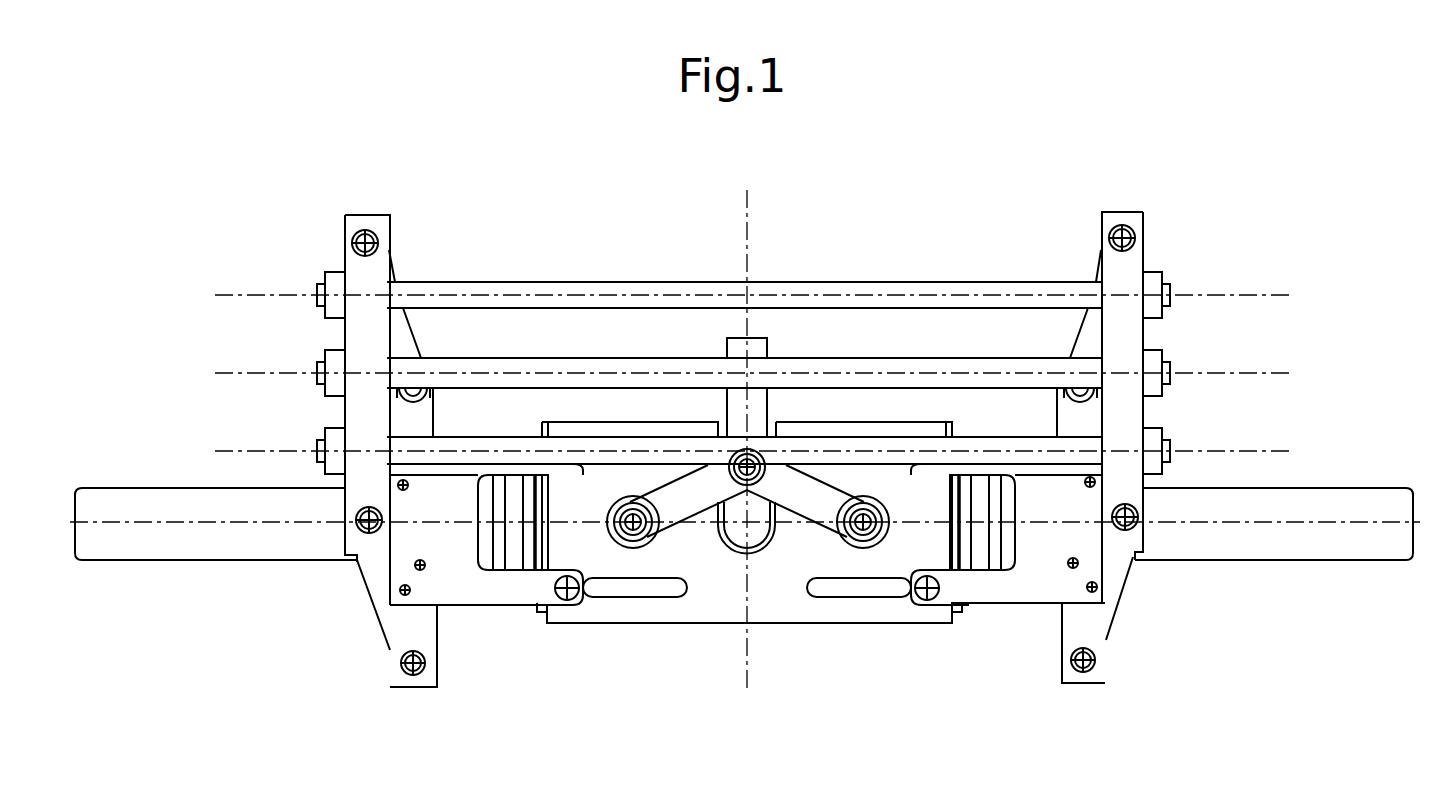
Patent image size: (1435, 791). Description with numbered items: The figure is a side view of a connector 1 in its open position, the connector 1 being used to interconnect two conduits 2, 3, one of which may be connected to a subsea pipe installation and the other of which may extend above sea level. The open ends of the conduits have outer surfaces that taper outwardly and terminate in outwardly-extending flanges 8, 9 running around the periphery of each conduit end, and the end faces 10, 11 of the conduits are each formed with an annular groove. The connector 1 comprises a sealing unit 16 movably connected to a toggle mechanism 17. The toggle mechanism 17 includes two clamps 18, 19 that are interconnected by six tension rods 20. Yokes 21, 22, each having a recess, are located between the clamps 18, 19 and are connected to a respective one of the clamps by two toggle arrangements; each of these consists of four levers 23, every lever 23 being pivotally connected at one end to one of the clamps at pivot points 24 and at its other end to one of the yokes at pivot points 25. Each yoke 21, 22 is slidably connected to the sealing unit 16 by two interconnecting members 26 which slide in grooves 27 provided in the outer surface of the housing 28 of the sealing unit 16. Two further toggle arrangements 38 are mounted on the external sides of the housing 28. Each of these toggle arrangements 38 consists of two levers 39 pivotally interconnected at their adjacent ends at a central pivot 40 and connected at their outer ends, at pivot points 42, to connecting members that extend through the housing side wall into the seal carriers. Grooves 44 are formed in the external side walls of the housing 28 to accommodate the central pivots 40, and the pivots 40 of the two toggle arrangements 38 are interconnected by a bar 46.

The connector 1 is at (824, 254).
The conduit 2 is at (237, 553).
The conduit 3 is at (1275, 553).
The flange 8 is at (527, 607).
The flange 9 is at (983, 605).
The end face 10 is at (538, 610).
The end face 11 is at (953, 593).
The sealing unit 16 is at (660, 628).
The toggle mechanism 17 is at (1164, 253).
The clamp 18 is at (357, 222).
The clamp 19 is at (1107, 212).
The tension rods 20 is at (565, 285).
The yoke 21 is at (400, 635).
The yoke 22 is at (1073, 627).
The levers 23 is at (397, 328).
The pivot points 24 is at (352, 245).
The pivot points 25 is at (425, 394).
The interconnecting members 26 is at (523, 477).
The grooves 27 is at (605, 467).
The housing 28 is at (782, 624).
The toggle arrangements 38 is at (706, 522).
The levers 39 is at (712, 508).
The central pivot 40 is at (752, 465).
The pivot points 42 is at (640, 528).
The grooves 44 is at (762, 532).
The bar 46 is at (770, 348).